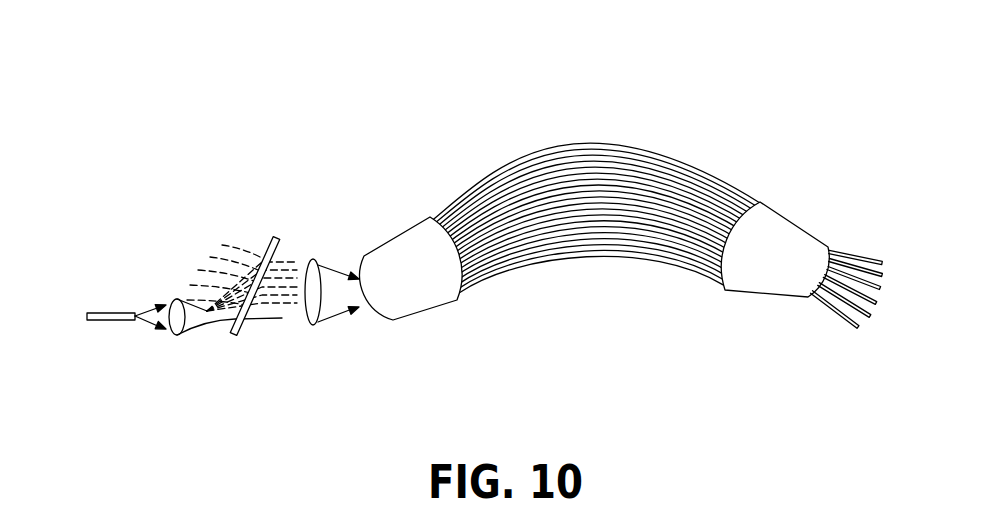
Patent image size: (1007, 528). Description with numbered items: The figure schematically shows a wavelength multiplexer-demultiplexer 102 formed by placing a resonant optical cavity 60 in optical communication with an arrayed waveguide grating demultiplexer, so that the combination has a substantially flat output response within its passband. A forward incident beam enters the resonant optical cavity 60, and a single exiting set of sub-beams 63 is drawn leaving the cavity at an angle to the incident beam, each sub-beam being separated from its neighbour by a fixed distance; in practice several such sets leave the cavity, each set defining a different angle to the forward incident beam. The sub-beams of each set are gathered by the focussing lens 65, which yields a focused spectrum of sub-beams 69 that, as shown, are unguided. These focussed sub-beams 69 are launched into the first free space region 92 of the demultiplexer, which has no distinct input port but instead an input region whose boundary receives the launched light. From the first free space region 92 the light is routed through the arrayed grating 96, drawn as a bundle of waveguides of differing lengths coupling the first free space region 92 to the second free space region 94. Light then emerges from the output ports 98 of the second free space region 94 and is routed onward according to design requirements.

The wavelength multiplexer-demultiplexer 102 is at (364, 112).
The resonant optical cavity 60 is at (262, 226).
The exiting set of sub-beams 63 is at (280, 322).
The focussing lens 65 is at (313, 325).
The focused spectrum of sub-beams 69 is at (348, 260).
The first free space region 92 is at (428, 300).
The second free space region 94 is at (792, 240).
The arrayed grating 96 is at (775, 160).
The output ports 98 is at (832, 312).